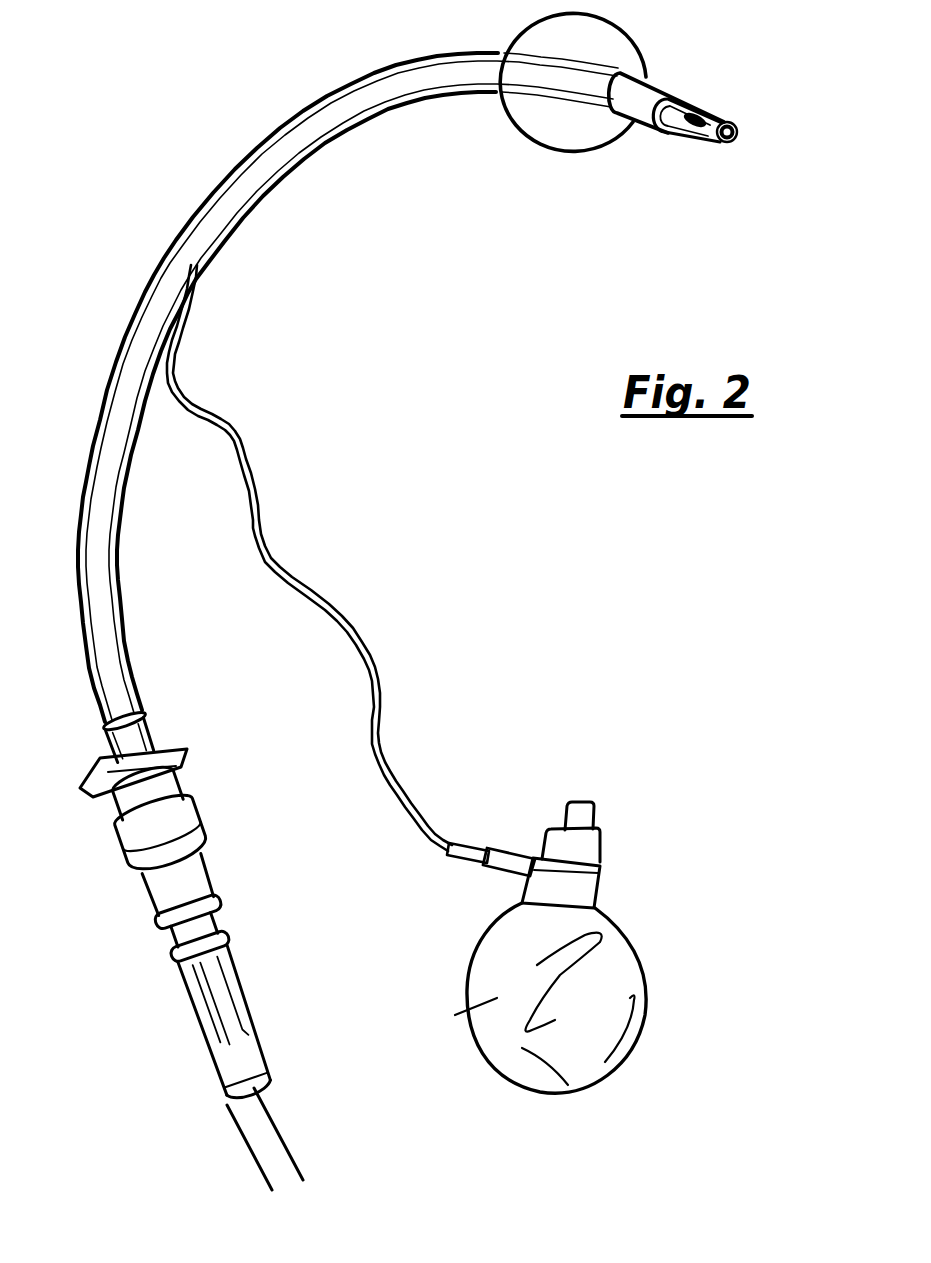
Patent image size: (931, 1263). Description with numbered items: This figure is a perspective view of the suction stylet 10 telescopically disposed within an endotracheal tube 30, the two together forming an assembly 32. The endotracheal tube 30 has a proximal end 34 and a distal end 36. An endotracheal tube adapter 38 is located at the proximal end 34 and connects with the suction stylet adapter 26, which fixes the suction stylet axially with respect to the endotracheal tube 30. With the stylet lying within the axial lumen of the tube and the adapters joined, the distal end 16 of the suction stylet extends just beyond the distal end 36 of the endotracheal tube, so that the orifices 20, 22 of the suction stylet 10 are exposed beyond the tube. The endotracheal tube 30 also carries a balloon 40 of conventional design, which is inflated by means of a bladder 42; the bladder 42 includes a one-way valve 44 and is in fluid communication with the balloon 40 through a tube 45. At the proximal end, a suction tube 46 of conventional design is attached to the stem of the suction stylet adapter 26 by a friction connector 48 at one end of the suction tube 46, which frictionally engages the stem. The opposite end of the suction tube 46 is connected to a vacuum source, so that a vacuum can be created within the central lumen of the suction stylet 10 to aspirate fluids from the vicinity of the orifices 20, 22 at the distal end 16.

The suction stylet 10 is at (723, 168).
The distal end of the suction stylet 16 is at (727, 117).
The orifice 20 is at (698, 130).
The orifice 22 is at (745, 137).
The suction stylet adapter 26 is at (242, 869).
The endotracheal tube 30 is at (345, 155).
The assembly 32 is at (222, 88).
The proximal end of the endotracheal tube 34 is at (143, 702).
The distal end of the endotracheal tube 36 is at (702, 93).
The endotracheal tube adapter 38 is at (218, 769).
The balloon 40 is at (535, 146).
The bladder 42 is at (455, 1015).
The one-way valve 44 is at (573, 888).
The tube 45 is at (265, 540).
The suction tube 46 is at (265, 1140).
The friction connector 48 is at (210, 1030).